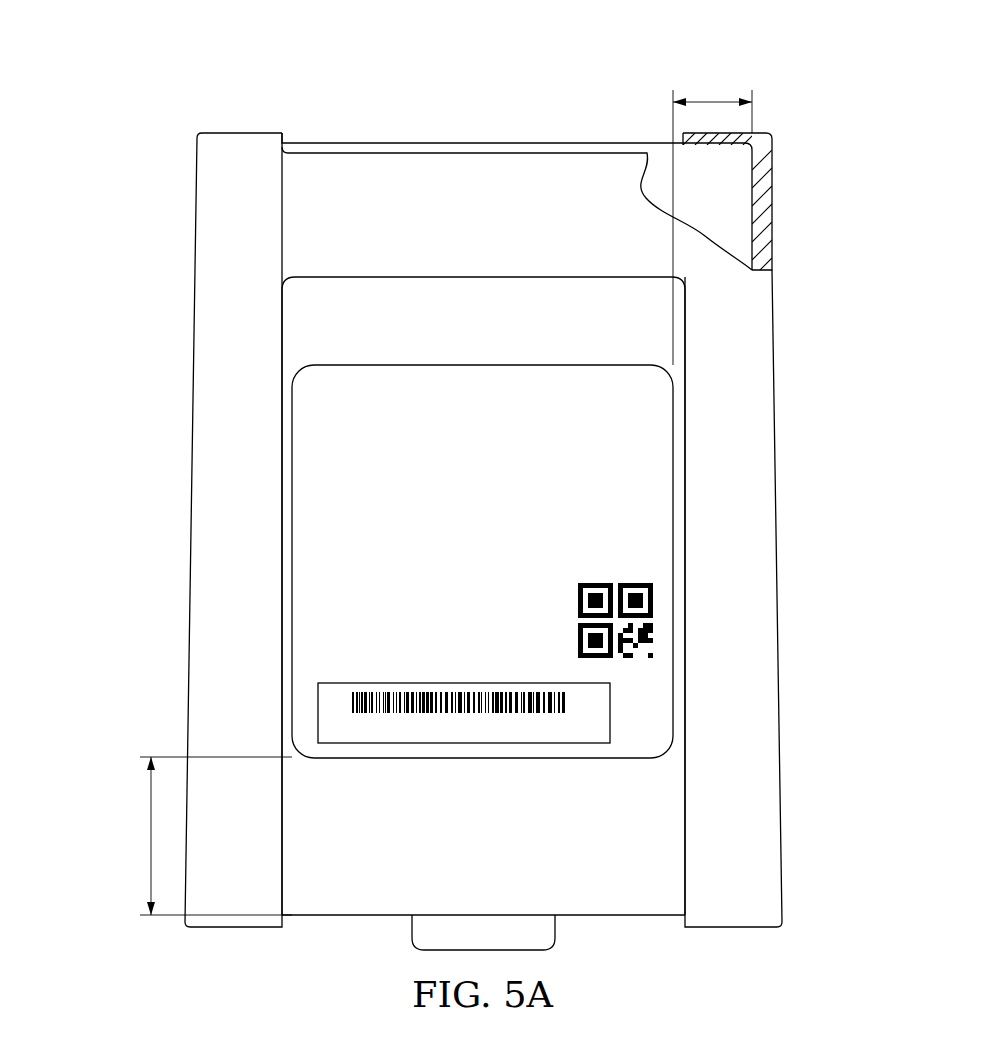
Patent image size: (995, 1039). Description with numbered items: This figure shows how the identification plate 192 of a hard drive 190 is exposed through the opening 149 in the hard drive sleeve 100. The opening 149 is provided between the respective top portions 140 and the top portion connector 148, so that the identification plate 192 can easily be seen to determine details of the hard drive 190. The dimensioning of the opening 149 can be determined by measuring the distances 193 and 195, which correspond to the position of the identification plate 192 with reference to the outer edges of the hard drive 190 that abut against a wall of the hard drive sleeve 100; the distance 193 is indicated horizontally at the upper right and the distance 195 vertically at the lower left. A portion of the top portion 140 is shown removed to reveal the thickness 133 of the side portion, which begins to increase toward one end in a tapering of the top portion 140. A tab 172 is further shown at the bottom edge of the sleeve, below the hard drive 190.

The hard drive sleeve 100 is at (377, 83).
The thickness 133 is at (762, 201).
The top portion 140 is at (258, 545).
The top portion connector 148 is at (505, 230).
The opening 149 is at (595, 326).
The tab 172 is at (555, 925).
The hard drive 190 is at (349, 283).
The identification plate 192 is at (483, 365).
The distance 193 is at (712, 100).
The distance 195 is at (151, 840).